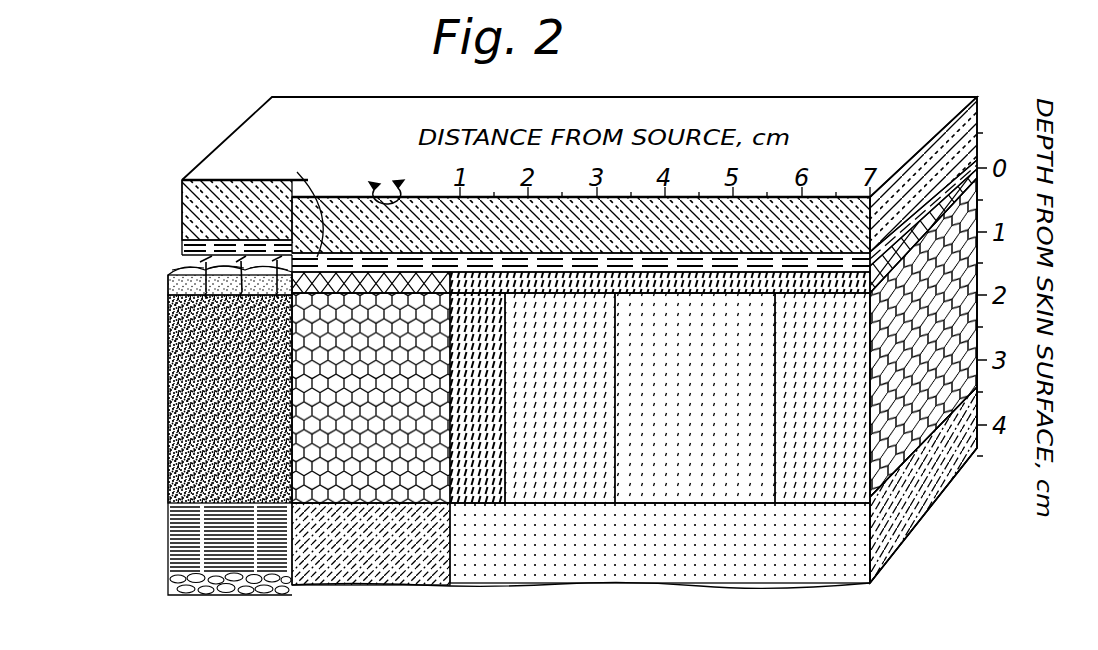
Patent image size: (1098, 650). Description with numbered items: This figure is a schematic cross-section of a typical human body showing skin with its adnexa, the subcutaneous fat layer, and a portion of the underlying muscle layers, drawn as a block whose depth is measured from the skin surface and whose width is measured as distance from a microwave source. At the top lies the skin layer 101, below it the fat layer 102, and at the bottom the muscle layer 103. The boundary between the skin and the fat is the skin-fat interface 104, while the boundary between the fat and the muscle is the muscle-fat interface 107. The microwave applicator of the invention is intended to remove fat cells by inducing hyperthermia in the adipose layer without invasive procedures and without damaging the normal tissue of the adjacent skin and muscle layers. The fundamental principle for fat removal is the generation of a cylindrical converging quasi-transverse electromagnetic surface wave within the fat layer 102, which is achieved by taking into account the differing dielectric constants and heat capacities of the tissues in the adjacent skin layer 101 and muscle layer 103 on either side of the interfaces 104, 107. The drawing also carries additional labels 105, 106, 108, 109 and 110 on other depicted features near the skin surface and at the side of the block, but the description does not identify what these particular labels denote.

The skin layer 101 is at (170, 284).
The fat layer 102 is at (168, 330).
The muscle layer 103 is at (168, 586).
The skin-fat interface 104 is at (182, 247).
The electrode pad 105 is at (182, 206).
The drug source / dispensing site 106 is at (378, 186).
The muscle-fat interface 107 is at (478, 508).
The rounded electrode edge 108 is at (297, 172).
The tissue region at depth 109 is at (938, 402).
The lower tissue region 110 is at (928, 466).